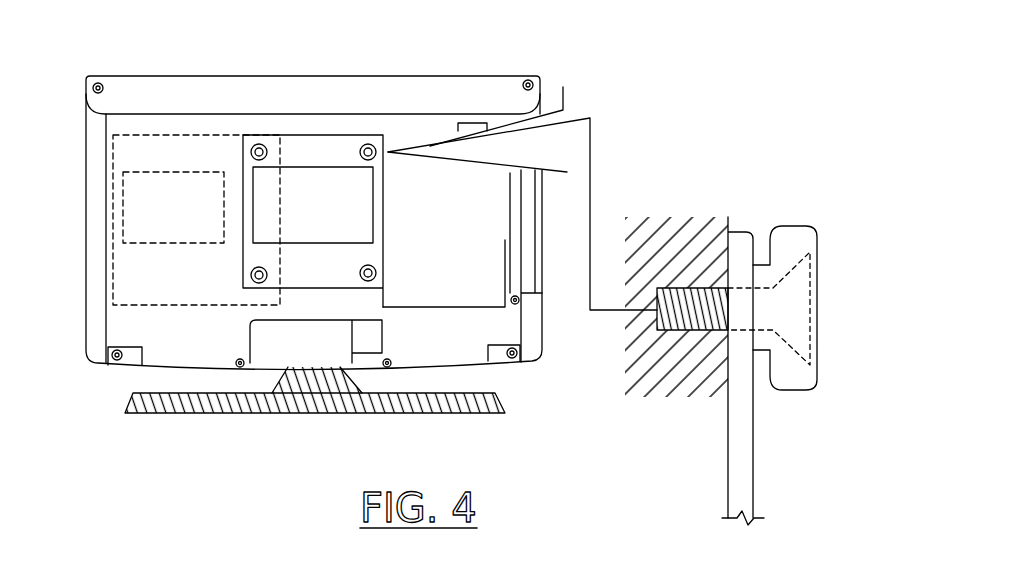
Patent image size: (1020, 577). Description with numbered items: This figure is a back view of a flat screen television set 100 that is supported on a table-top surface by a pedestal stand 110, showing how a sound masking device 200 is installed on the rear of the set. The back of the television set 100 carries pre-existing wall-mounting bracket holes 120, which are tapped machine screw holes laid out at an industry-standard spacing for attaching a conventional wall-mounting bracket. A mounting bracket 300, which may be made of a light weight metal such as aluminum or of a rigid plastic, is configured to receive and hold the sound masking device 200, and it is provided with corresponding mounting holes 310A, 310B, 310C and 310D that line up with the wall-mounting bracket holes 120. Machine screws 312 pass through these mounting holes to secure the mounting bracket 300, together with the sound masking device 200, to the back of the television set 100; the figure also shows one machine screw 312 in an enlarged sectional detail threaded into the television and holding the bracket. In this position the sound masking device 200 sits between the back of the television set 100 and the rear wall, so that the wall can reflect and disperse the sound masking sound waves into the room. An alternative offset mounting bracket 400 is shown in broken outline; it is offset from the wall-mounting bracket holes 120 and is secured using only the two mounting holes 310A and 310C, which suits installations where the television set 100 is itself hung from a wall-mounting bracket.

The television set 100 is at (477, 76).
The pedestal stand 110 is at (213, 414).
The wall-mounting bracket holes 120 is at (334, 113).
The sound masking device 200 is at (200, 221).
The mounting bracket 300 is at (243, 250).
The mounting hole 310A is at (251, 147).
The mounting hole 310B is at (360, 145).
The mounting hole 310C is at (252, 278).
The mounting hole 310D is at (367, 282).
The machine screws 312 is at (814, 312).
The offset mounting bracket 400 is at (112, 219).